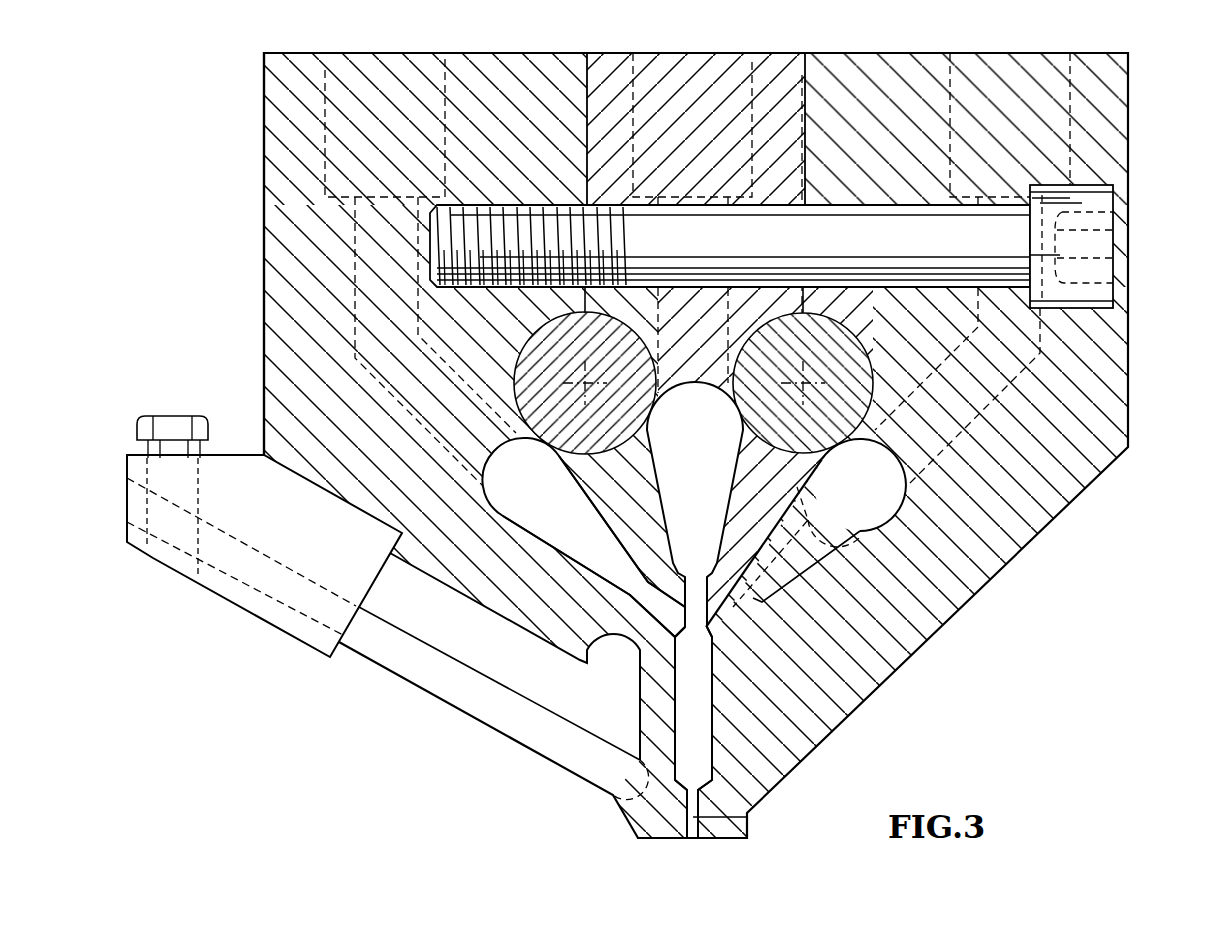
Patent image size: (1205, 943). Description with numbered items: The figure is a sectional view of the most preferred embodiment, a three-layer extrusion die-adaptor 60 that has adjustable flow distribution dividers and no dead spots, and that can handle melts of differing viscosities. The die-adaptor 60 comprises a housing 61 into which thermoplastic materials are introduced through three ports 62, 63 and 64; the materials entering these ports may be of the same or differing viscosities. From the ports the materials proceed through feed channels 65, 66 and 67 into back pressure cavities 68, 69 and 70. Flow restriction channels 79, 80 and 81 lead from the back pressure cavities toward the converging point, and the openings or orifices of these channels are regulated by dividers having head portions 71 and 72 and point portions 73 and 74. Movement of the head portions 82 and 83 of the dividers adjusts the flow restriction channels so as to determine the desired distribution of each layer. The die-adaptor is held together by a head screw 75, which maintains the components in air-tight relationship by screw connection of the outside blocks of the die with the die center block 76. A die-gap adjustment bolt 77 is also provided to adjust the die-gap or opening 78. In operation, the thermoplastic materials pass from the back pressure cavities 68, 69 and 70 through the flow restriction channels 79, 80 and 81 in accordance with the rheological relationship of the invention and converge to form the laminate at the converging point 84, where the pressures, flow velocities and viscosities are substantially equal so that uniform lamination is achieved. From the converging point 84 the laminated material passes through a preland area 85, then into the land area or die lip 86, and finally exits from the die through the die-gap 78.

The die-adaptor 60 is at (980, 607).
The housing 61 is at (272, 241).
The port 62 is at (398, 60).
The port 63 is at (632, 60).
The port 64 is at (1036, 66).
The feed channel 65 is at (394, 319).
The feed channel 66 is at (703, 327).
The feed channel 67 is at (1009, 356).
The back pressure cavity 68 is at (537, 488).
The back pressure cavity 69 is at (709, 443).
The back pressure cavity 70 is at (872, 488).
The head portion of divider 71 is at (552, 332).
The head portion of divider 72 is at (838, 330).
The point portion of divider 73 is at (677, 602).
The point portion of divider 74 is at (740, 615).
The head screw 75 is at (1118, 203).
The die center block 76 is at (783, 70).
The die-gap adjustment bolt 77 is at (208, 422).
The die-gap 78 is at (682, 848).
The flow restriction channel 79 is at (669, 621).
The flow restriction channel 80 is at (695, 603).
The flow restriction channel 81 is at (738, 605).
The head portion of divider 82 is at (582, 377).
The head portion of divider 83 is at (802, 378).
The converging point 84 is at (697, 642).
The preland area 85 is at (706, 730).
The land area 86 is at (745, 818).